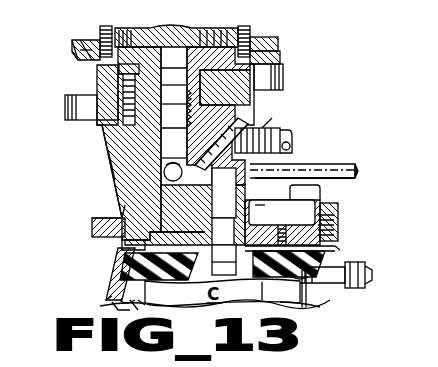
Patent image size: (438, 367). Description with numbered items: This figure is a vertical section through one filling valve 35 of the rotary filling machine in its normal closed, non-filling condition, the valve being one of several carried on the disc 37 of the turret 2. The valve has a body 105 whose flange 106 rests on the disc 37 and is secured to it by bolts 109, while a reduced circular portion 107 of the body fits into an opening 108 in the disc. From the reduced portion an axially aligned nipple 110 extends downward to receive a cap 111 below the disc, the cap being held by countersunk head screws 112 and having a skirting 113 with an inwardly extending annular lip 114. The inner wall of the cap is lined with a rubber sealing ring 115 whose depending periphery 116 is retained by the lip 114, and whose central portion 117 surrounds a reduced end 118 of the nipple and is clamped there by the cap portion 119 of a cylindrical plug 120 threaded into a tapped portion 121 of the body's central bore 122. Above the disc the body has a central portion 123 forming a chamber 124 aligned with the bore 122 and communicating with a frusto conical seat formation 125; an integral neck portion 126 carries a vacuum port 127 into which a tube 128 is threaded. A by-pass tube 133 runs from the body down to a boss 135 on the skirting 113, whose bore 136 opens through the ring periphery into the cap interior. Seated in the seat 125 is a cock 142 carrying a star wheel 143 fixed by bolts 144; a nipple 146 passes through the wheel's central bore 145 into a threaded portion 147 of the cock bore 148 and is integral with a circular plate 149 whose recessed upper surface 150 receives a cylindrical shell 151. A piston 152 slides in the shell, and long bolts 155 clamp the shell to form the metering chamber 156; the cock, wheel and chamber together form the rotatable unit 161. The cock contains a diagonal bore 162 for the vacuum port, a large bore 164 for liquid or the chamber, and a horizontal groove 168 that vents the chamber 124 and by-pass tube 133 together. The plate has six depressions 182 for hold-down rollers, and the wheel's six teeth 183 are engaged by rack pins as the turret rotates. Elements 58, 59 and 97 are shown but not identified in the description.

The turret 2 is at (92, 221).
The filling valve 35 is at (110, 181).
The disc 37 is at (92, 231).
The base 58 is at (288, 313).
The support leg 59 is at (135, 306).
The fastener 97 is at (145, 307).
The body 105 is at (120, 189).
The flange 106 is at (328, 206).
The reduced circular portion 107 is at (334, 228).
The opening 108 is at (125, 242).
The bolts 109 is at (310, 175).
The nipple 110 is at (282, 222).
The cap 111 is at (108, 291).
The countersunk head screws 112 is at (336, 248).
The skirting 113 is at (112, 271).
The annular lip 114 is at (110, 307).
The rubber sealing ring 115 is at (222, 292).
The depending periphery 116 is at (120, 299).
The central portion 117 is at (288, 289).
The reduced end 118 is at (224, 260).
The cap portion 119 is at (251, 295).
The cylindrical plug 120 is at (224, 268).
The tapped portion 121 is at (223, 231).
The central bore 122 is at (262, 208).
The central portion 123 is at (290, 193).
The chamber 124 is at (262, 178).
The frusto conical seat formation 125 is at (108, 149).
The neck portion 126 is at (268, 126).
The vacuum port 127 is at (270, 130).
The tube 128 is at (290, 145).
The by-pass tube 133 is at (342, 167).
The boss 135 is at (330, 265).
The bore 136 is at (289, 285).
The cock 142 is at (140, 202).
The star wheel 143 is at (100, 87).
The bolts 144 is at (119, 69).
The central bore 145 is at (174, 78).
The nipple 146 is at (174, 97).
The threaded portion 147 is at (176, 109).
The bore 148 is at (174, 151).
The circular plate 149 is at (279, 44).
The recessed upper surface 150 is at (94, 44).
The cylindrical shell 151 is at (280, 58).
The piston 152 is at (176, 36).
The long bolts 155 is at (86, 53).
The metering chamber 156 is at (174, 118).
The unit 161 is at (72, 45).
The diagonal bore 162 is at (215, 140).
The large bore 164 is at (175, 172).
The horizontal groove 168 is at (224, 193).
The depressions 182 is at (104, 52).
The teeth 183 is at (65, 107).